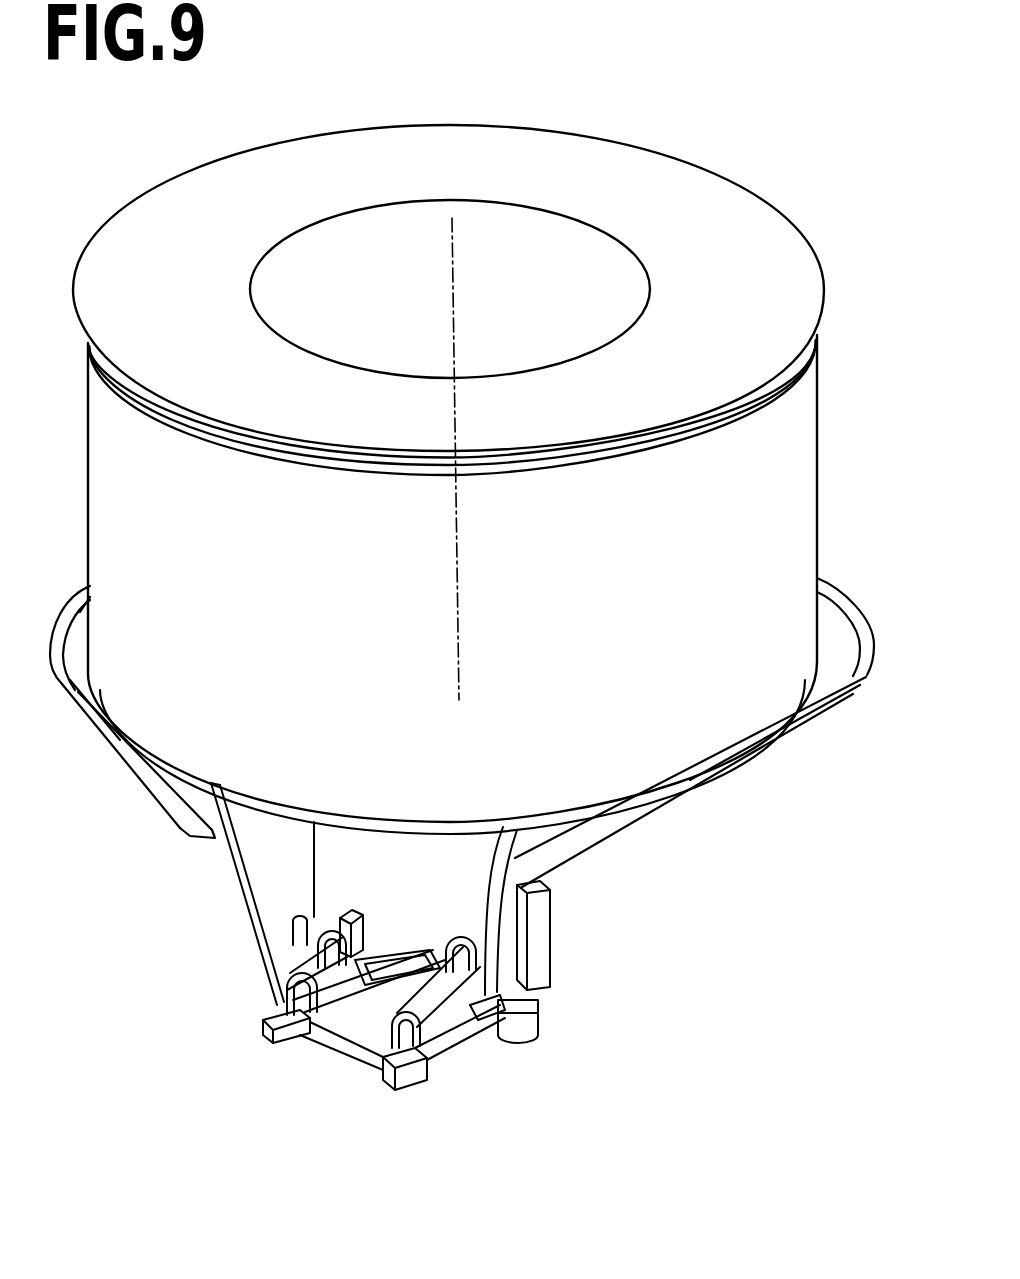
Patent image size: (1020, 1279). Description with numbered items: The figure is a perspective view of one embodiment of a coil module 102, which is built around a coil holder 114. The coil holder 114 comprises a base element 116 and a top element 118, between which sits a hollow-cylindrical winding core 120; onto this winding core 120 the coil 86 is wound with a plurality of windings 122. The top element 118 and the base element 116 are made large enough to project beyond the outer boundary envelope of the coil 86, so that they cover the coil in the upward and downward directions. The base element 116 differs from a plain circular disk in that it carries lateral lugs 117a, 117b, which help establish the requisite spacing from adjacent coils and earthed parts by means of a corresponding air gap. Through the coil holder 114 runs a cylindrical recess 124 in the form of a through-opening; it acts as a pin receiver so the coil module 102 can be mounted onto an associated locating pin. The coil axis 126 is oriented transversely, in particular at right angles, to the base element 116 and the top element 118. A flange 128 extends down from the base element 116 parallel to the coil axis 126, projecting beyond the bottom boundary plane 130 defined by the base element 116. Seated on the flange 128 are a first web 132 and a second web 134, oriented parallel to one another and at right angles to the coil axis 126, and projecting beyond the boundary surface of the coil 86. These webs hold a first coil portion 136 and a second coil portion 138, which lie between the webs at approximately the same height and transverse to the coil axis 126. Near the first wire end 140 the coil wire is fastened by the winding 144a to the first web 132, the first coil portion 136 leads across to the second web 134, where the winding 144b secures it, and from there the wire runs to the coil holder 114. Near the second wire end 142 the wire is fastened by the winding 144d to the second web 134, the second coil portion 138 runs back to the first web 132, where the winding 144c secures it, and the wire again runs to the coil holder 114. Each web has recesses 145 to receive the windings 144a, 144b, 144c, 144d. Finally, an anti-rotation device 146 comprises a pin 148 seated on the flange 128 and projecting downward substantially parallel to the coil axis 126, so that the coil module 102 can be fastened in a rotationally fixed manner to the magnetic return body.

The coil module 102 is at (42, 458).
The coil 86 is at (805, 492).
The coil holder 114 is at (858, 668).
The base element 116 is at (838, 718).
The lateral lug 117a is at (75, 625).
The lateral lug 117b is at (847, 615).
The top element 118 is at (790, 313).
The winding core 120 is at (620, 255).
The windings 122 is at (787, 367).
The recess 124 is at (510, 236).
The coil axis 126 is at (466, 549).
The flange 128 is at (313, 883).
The bottom boundary plane 130 is at (113, 752).
The first web 132 is at (283, 1040).
The second web 134 is at (480, 1013).
The first coil portion 136 is at (413, 950).
The second coil portion 138 is at (345, 1058).
The first wire end 140 is at (298, 929).
The second wire end 142 is at (420, 1095).
The winding 144a is at (327, 928).
The winding 144b is at (490, 900).
The winding 144c is at (277, 1005).
The winding 144d is at (430, 1040).
The recesses 145 is at (403, 907).
The anti-rotation device 146 is at (600, 990).
The pin 148 is at (533, 1017).